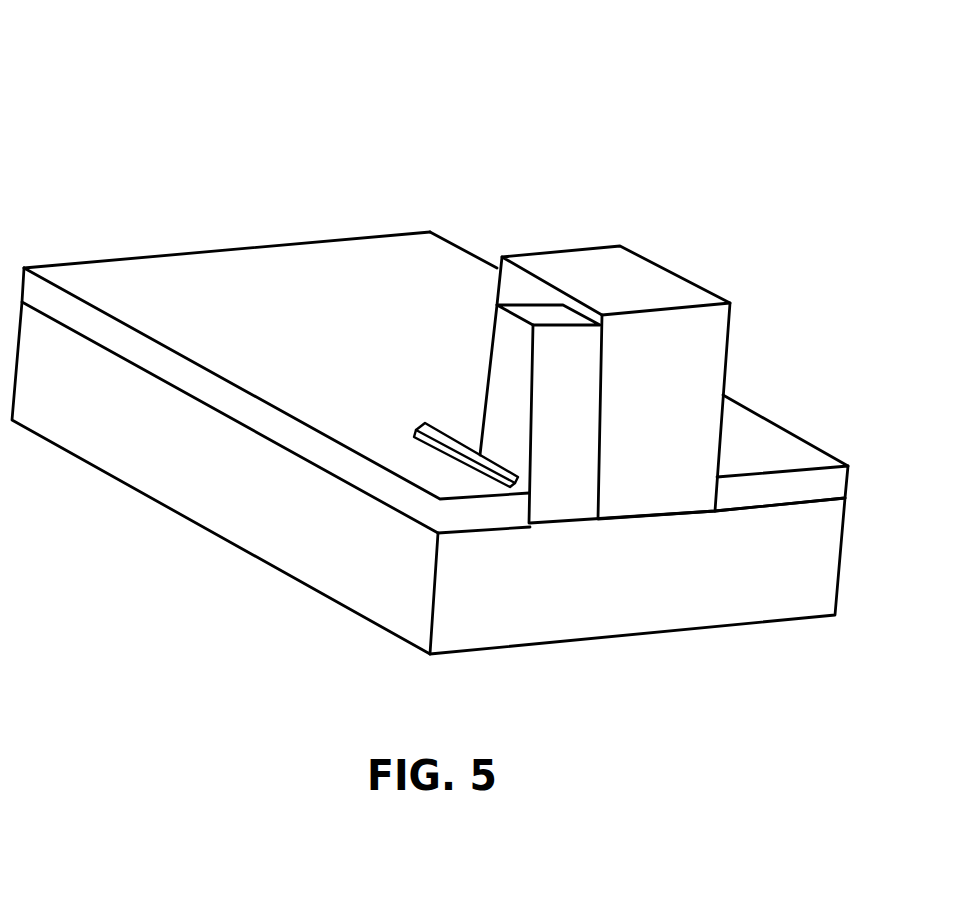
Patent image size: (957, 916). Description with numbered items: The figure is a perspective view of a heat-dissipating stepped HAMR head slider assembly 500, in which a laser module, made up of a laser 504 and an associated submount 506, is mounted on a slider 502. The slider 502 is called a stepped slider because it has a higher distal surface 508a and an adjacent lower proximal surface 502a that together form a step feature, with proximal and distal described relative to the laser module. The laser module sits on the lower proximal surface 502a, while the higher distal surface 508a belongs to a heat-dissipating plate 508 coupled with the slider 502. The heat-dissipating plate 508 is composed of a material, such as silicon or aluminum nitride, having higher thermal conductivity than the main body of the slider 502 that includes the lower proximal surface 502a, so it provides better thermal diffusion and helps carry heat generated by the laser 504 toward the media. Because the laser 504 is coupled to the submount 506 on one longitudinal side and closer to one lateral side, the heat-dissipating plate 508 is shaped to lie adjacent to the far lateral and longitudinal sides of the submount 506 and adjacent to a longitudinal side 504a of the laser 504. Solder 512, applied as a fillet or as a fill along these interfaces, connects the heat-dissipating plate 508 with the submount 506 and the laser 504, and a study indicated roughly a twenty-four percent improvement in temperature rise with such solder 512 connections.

The HAMR head slider assembly 500 is at (179, 73).
The slider 502 is at (162, 472).
The lower proximal surface 502a is at (525, 522).
The laser 504 is at (545, 310).
The longitudinal side of the laser 504a is at (507, 363).
The submount 506 is at (614, 272).
The heat-dissipating plate 508 is at (137, 277).
The higher distal surface 508a is at (297, 300).
The solder 512 is at (457, 447).